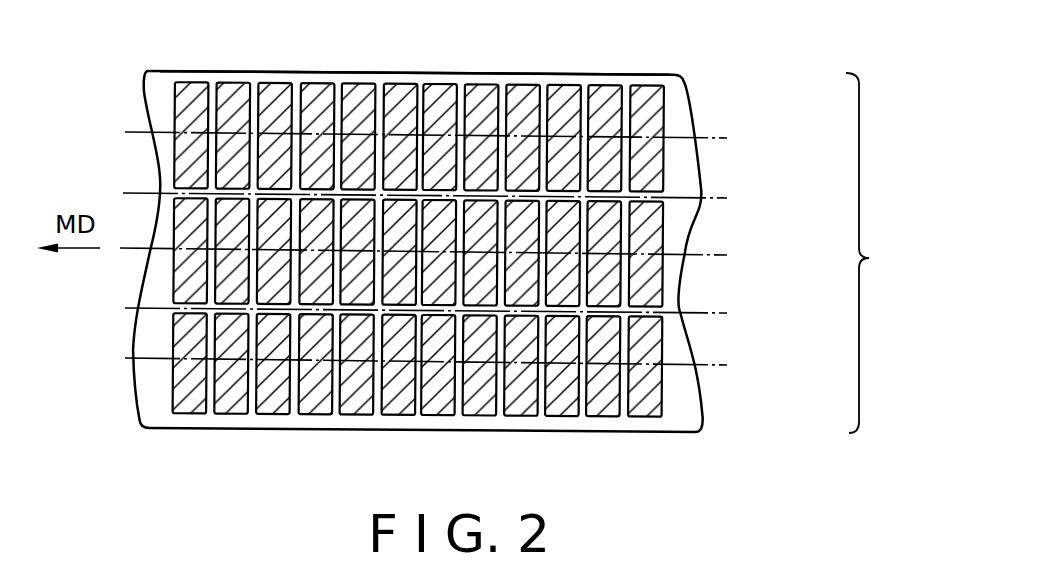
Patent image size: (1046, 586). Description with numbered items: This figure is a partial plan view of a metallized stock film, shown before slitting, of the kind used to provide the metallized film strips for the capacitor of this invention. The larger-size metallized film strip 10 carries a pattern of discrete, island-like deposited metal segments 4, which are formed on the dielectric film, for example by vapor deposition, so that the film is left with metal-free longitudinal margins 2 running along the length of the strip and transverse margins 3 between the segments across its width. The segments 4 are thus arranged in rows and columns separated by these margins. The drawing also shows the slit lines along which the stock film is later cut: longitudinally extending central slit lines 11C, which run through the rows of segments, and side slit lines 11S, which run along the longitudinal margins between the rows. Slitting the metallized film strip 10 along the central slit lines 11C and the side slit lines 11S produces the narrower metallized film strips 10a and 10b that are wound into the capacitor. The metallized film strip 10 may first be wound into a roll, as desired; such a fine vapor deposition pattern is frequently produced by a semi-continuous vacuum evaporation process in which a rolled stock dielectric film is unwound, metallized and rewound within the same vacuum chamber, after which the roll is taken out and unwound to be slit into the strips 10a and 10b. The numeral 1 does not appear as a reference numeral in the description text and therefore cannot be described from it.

The continuous web 1 is at (692, 86).
The longitudinal margins 2 is at (357, 72).
The transverse margins 3 is at (378, 90).
The deposited metal segments 4 is at (520, 100).
The metallized film strip 10 is at (899, 272).
The metallized film strip 10a is at (683, 176).
The metallized film strip 10b is at (679, 124).
The central slit lines 11C is at (457, 251).
The side slit lines 11S is at (458, 255).